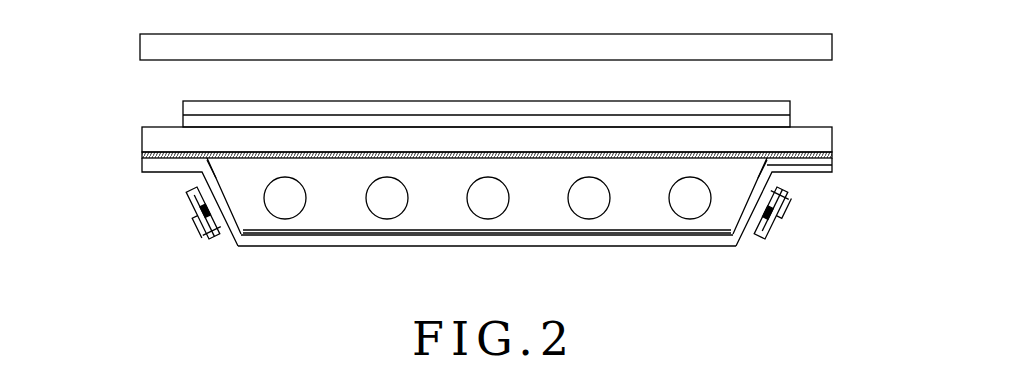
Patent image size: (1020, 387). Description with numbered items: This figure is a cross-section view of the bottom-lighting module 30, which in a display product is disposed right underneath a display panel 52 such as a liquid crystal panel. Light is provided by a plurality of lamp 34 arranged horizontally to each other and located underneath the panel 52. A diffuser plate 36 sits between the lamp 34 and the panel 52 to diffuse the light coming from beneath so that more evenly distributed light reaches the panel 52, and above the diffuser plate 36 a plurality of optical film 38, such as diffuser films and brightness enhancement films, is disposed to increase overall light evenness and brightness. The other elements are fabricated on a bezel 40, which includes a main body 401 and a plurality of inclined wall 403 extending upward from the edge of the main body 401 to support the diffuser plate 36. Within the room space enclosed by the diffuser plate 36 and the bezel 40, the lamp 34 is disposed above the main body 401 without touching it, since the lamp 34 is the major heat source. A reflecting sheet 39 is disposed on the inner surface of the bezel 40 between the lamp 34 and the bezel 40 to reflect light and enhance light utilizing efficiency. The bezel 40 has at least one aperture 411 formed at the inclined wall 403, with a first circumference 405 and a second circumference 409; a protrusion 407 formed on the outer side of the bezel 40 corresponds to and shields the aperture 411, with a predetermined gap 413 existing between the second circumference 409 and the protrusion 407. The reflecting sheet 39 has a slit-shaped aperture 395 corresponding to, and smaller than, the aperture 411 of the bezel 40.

The bottom-lighting module 30 is at (472, 124).
The display panel 52 is at (832, 45).
The optical film 38 is at (790, 113).
The diffuser plate 36 is at (833, 136).
The bezel 40 is at (846, 164).
The aperture of the reflecting sheet 395 is at (241, 206).
The main body 401 is at (556, 250).
The reflecting sheet 39 is at (497, 231).
The lamp 34 is at (388, 212).
The second circumference 409 is at (218, 182).
The predetermined gap 413 is at (186, 181).
The protrusion 407 is at (192, 205).
The aperture 411 is at (200, 232).
The first circumference 405 is at (192, 254).
The inclined wall 403 is at (217, 241).